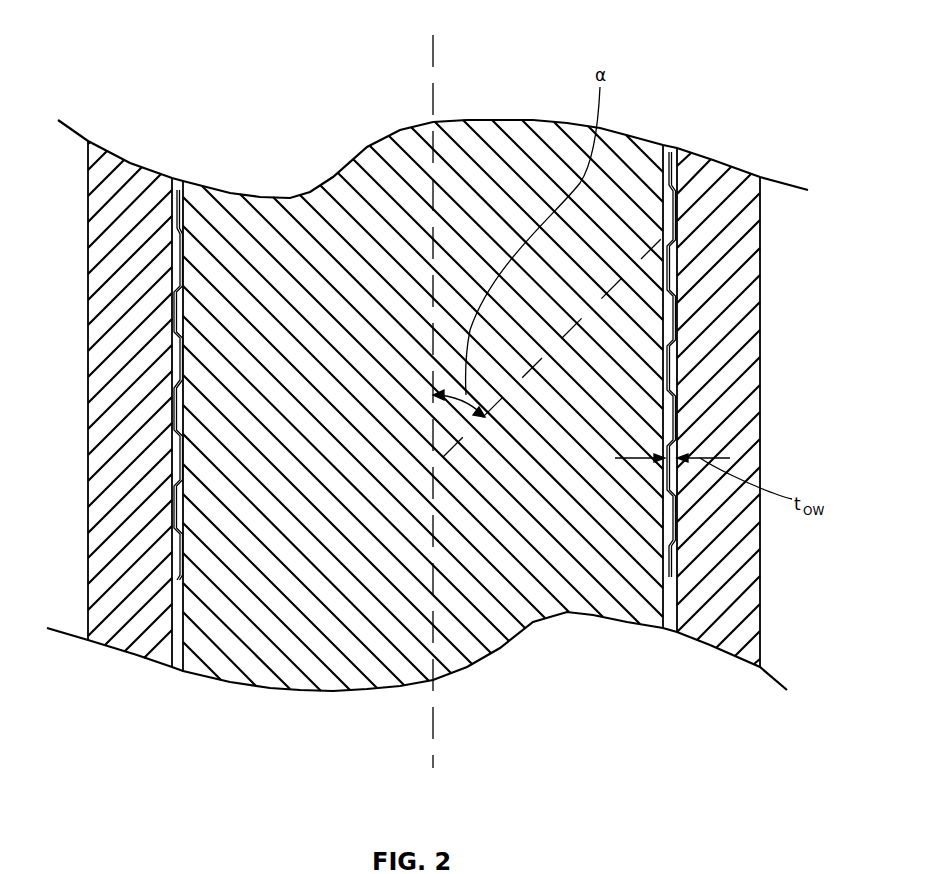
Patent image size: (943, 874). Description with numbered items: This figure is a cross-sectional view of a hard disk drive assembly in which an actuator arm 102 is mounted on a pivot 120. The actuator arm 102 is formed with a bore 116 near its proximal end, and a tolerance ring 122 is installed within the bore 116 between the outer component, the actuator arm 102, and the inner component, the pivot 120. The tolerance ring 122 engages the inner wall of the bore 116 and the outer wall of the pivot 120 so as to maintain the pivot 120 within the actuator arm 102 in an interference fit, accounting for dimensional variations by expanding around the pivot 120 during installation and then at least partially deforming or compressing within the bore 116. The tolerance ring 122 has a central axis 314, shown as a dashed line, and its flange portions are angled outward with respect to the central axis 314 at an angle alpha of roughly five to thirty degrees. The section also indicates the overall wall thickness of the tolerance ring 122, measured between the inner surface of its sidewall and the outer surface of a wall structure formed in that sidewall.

The actuator arm 102 is at (137, 645).
The bore 116 is at (178, 193).
The pivot 120 is at (243, 657).
The tolerance ring 122 is at (147, 175).
The central axis 314 is at (436, 43).